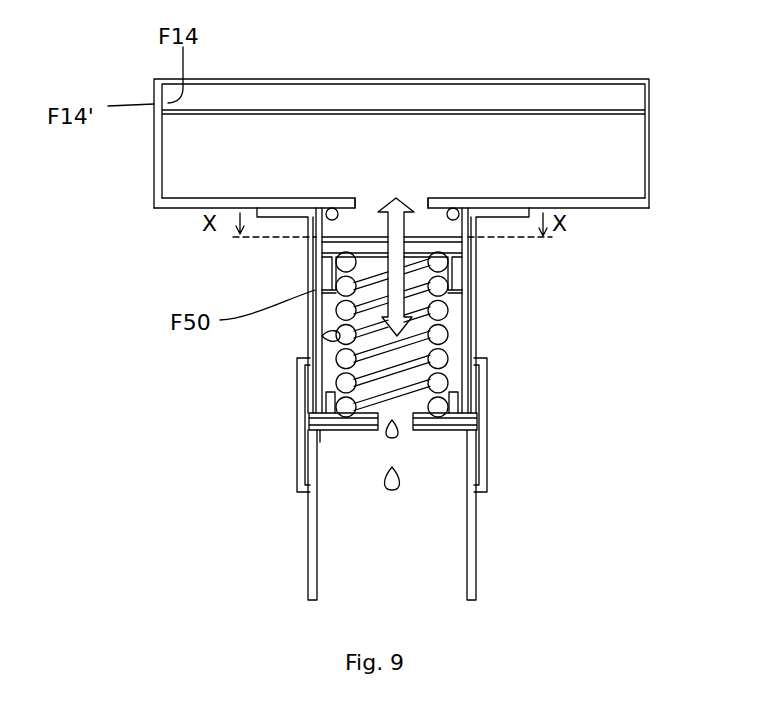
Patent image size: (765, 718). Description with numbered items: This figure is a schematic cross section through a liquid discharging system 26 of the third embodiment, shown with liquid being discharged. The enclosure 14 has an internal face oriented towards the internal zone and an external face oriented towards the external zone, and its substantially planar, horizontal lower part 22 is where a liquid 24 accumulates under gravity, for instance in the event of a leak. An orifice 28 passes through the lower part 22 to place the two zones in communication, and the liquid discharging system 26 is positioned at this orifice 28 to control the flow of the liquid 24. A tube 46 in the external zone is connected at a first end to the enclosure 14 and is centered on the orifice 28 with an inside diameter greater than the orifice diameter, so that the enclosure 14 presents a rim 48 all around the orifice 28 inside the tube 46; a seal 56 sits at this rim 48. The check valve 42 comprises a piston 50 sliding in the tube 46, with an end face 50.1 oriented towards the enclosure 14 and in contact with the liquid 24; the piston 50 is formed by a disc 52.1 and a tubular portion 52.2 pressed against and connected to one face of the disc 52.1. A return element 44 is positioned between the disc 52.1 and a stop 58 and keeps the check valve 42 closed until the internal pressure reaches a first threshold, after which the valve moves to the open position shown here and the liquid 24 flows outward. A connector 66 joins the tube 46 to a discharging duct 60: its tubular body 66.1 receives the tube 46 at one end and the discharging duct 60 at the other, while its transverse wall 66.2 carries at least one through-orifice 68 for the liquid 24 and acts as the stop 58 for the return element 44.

The enclosure 14 is at (153, 160).
The lower part 22 is at (603, 209).
The liquid 24 is at (525, 156).
The liquid discharging system 26 is at (417, 203).
The orifice 28 is at (356, 255).
The check valve 42 is at (361, 240).
The return element 44 is at (450, 322).
The tube 46 is at (478, 273).
The rim 48 is at (348, 203).
The piston 50 is at (323, 275).
The end face 50.1 is at (422, 247).
The disc 52.1 is at (313, 243).
The tubular portion 52.2 is at (466, 294).
The seal 56 is at (455, 208).
The stop 58 is at (357, 431).
The discharging duct 60 is at (477, 540).
The connector 66 is at (487, 440).
The tubular body 66.1 is at (297, 402).
The transverse wall 66.2 is at (333, 430).
The through-orifice 68 is at (403, 428).